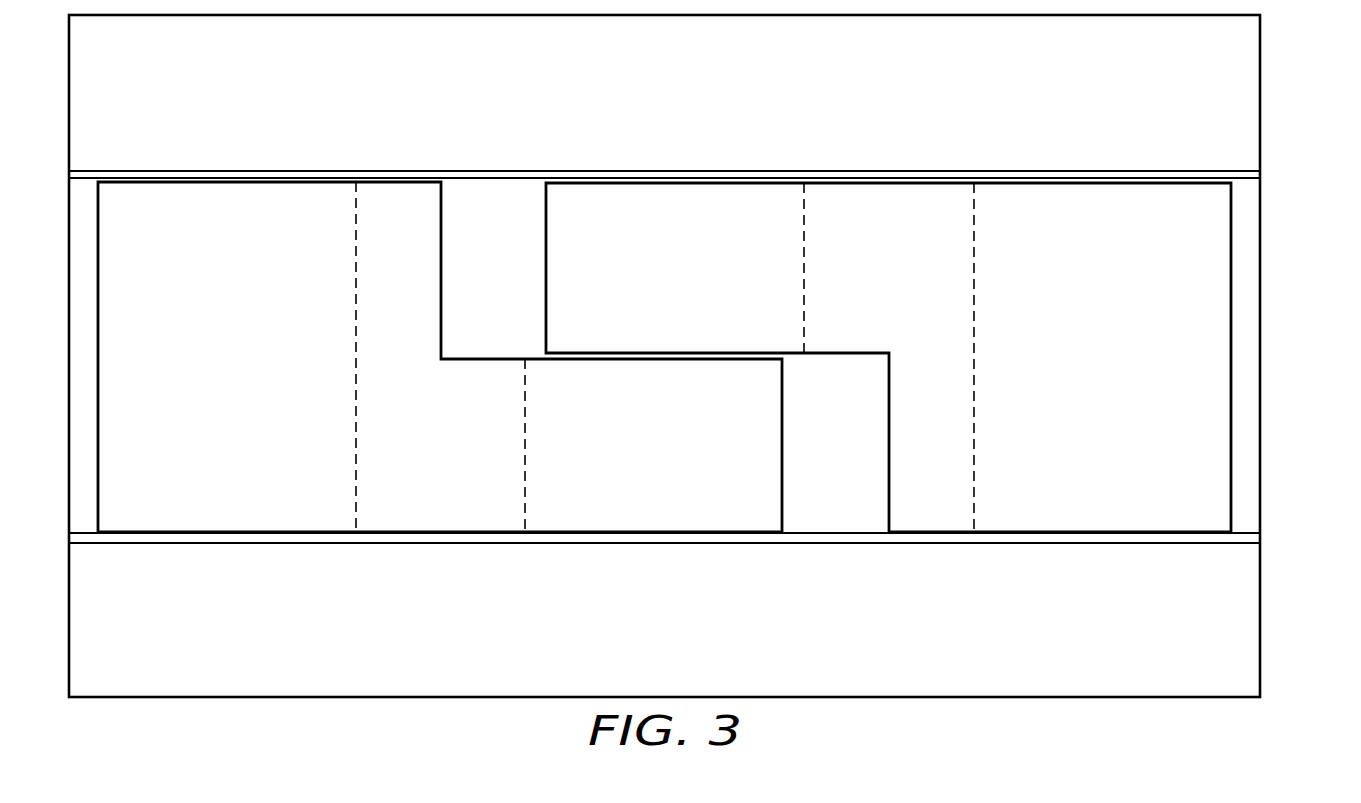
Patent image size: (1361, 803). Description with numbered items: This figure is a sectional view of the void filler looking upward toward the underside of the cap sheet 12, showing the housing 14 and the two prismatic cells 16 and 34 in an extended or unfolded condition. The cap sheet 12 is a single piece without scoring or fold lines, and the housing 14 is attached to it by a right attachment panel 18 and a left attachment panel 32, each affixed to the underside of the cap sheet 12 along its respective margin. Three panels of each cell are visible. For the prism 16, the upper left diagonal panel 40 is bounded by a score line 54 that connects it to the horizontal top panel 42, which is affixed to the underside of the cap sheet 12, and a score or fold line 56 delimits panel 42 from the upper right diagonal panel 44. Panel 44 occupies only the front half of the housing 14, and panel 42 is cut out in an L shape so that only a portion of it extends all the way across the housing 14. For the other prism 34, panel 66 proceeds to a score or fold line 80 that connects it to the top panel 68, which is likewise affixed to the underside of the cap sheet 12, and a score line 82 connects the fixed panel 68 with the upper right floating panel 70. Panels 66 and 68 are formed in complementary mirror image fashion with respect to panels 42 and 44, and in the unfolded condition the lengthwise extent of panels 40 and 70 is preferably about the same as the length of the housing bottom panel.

The cap sheet 12 is at (510, 282).
The housing 14 is at (1288, 268).
The prism 16 is at (217, 226).
The right attachment panel 18 is at (683, 104).
The left attachment panel 32 is at (683, 632).
The prism 34 is at (1112, 224).
The upper left diagonal panel 40 is at (244, 370).
The horizontal top panel 42 is at (457, 459).
The upper right diagonal panel 44 is at (672, 457).
The score line 54 is at (354, 441).
The score or fold line 56 is at (527, 442).
The panel 66 is at (693, 282).
The top panel 68 is at (907, 282).
The upper right floating panel 70 is at (1119, 372).
The score or fold line 80 is at (802, 270).
The score line 82 is at (975, 271).